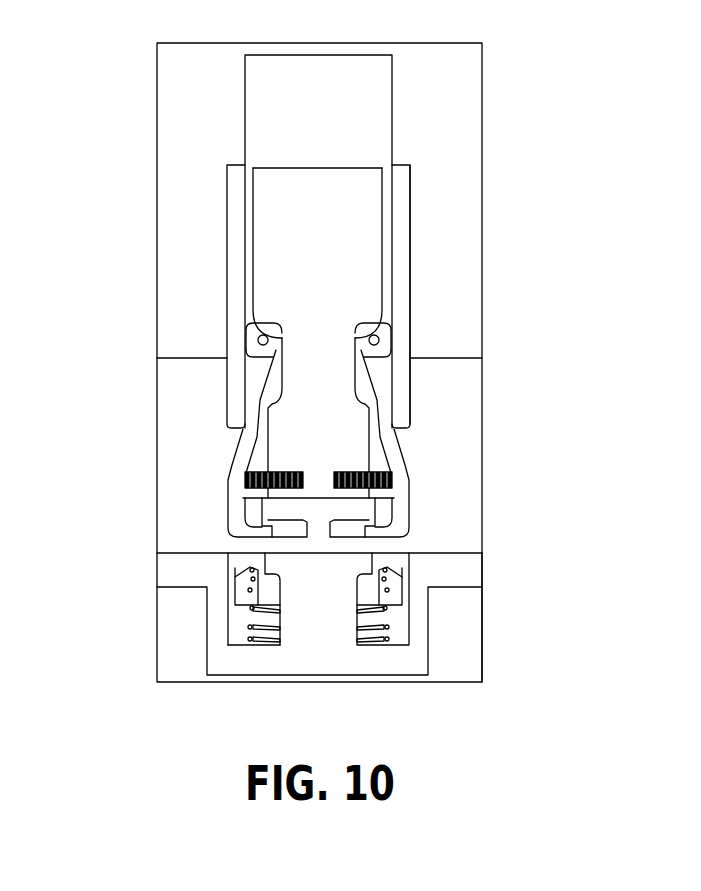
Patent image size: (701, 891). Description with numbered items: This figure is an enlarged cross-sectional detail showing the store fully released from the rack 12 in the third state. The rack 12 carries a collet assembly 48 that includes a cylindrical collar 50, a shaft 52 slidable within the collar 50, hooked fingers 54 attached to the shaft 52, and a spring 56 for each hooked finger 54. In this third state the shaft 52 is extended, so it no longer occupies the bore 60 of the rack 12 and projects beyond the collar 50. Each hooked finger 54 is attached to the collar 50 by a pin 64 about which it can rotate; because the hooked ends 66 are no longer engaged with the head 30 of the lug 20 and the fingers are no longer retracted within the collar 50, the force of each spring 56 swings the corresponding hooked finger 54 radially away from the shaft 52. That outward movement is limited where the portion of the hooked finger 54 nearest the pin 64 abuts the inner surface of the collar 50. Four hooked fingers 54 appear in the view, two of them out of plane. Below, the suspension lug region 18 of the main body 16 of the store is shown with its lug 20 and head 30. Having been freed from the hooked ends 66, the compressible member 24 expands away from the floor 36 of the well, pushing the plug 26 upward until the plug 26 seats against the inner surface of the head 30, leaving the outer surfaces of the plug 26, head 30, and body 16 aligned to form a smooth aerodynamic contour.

The rack 12 is at (213, 95).
The main body 16 is at (512, 587).
The suspension lug region 18 is at (451, 654).
The lug 20 is at (326, 615).
The compressible member 24 is at (252, 627).
The plug 26 is at (236, 563).
The head 30 is at (360, 566).
The floor 36 is at (245, 646).
The collet assembly 48 is at (418, 192).
The cylindrical collar 50 is at (397, 287).
The shaft 52 is at (333, 265).
The hooked finger 54 is at (237, 479).
The spring 56 is at (357, 472).
The bore 60 is at (372, 128).
The pin 64 is at (257, 339).
The hooked end 66 is at (240, 525).